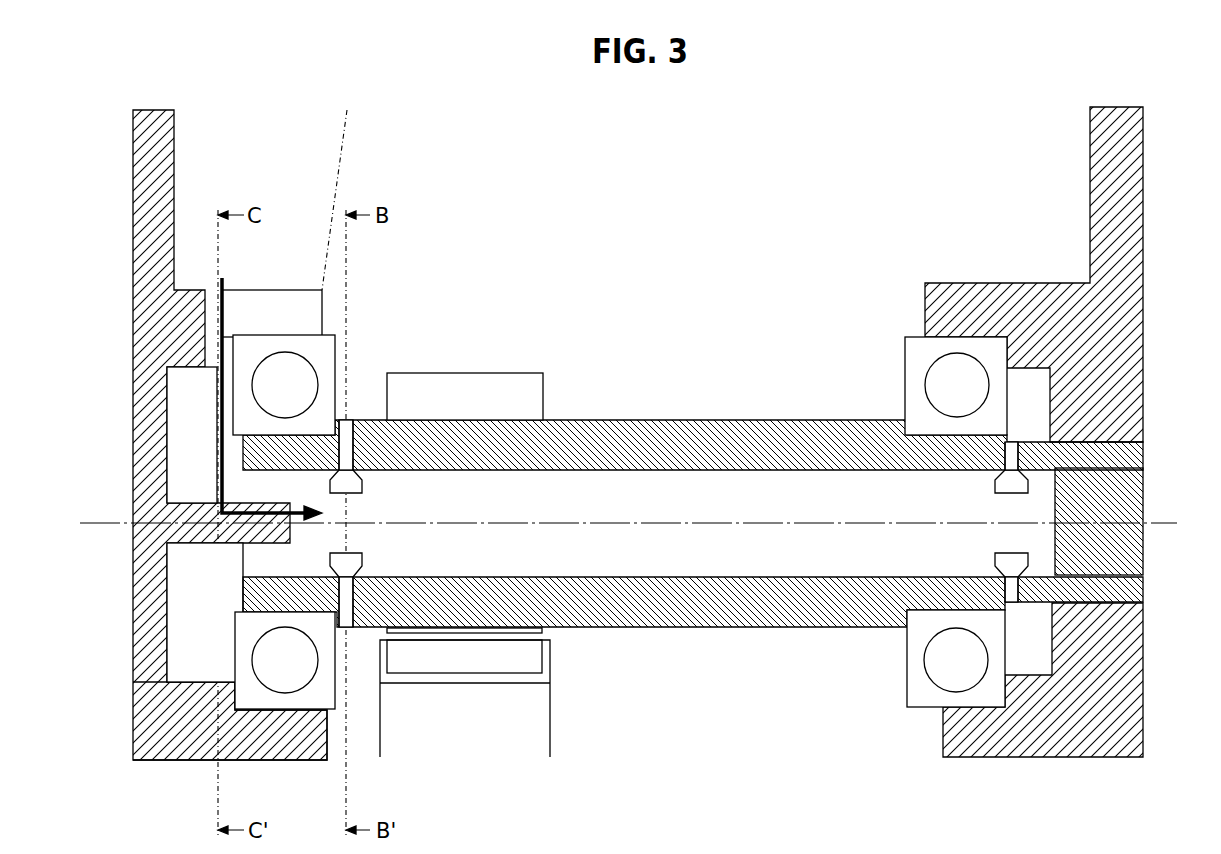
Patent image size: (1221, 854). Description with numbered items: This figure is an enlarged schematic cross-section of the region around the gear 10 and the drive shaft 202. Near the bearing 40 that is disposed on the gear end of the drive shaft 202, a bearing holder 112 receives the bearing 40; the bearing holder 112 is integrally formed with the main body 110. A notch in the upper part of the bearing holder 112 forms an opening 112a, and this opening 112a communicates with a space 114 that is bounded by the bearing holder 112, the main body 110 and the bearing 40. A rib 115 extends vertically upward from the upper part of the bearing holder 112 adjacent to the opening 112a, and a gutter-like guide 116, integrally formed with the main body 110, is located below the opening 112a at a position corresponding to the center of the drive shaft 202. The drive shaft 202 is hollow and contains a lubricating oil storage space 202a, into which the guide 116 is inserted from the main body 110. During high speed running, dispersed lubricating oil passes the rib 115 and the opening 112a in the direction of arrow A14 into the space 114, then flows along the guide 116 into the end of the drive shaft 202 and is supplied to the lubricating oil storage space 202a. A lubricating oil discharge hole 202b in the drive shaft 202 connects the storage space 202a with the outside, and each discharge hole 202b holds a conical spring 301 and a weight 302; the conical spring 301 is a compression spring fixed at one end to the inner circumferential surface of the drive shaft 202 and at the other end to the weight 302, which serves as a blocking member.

The gear 10 is at (462, 386).
The bearing 40 is at (252, 387).
The main body 110 is at (133, 238).
The bearing holder 112 is at (298, 760).
The opening 112a is at (292, 307).
The space 114 is at (188, 430).
The rib 115 is at (312, 147).
The guide 116 is at (243, 553).
The drive shaft 202 is at (720, 430).
The lubricating oil storage space 202a is at (725, 555).
The lubricating oil discharge hole 202b is at (348, 420).
The conical spring 301 is at (330, 477).
The weight 302 is at (333, 487).
The arrow A14 is at (218, 313).